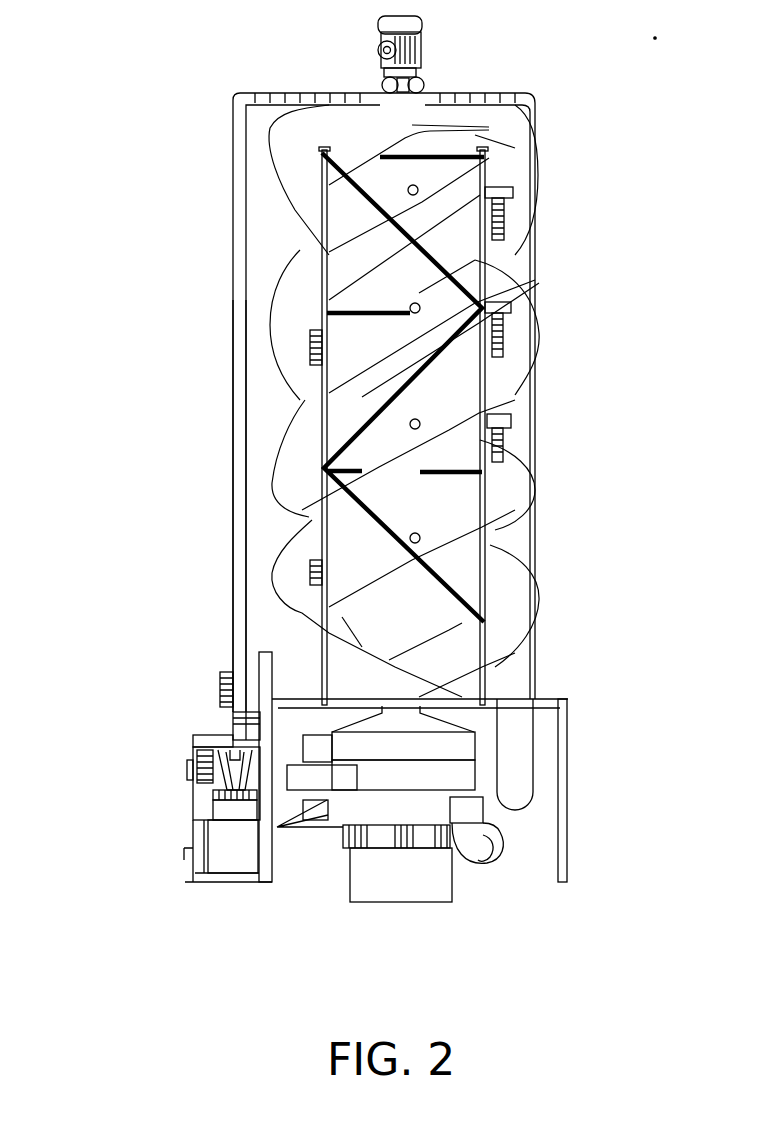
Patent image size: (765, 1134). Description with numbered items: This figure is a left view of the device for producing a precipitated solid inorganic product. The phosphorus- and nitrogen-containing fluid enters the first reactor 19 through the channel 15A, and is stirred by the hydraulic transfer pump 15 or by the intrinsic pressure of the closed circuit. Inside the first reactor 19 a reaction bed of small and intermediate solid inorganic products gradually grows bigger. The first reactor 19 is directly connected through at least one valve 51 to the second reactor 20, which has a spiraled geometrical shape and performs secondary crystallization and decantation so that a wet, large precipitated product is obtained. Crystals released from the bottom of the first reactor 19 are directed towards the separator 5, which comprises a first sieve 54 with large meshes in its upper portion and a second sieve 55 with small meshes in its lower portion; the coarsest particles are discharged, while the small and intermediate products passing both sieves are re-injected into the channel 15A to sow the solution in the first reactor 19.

The separator 5 is at (478, 746).
The hydraulic transfer pump 15 is at (230, 778).
The channel for providing the first fluid 15A is at (233, 626).
The first reactor 19 is at (425, 380).
The second reactor 20 is at (290, 355).
The valve 51 is at (410, 538).
The first sieve 54 is at (478, 762).
The second sieve 55 is at (478, 790).